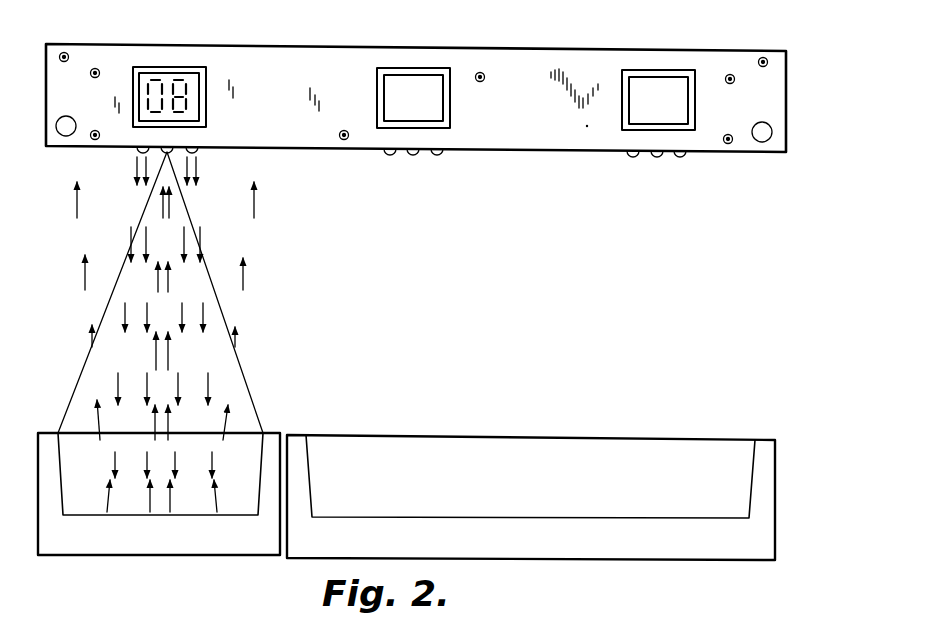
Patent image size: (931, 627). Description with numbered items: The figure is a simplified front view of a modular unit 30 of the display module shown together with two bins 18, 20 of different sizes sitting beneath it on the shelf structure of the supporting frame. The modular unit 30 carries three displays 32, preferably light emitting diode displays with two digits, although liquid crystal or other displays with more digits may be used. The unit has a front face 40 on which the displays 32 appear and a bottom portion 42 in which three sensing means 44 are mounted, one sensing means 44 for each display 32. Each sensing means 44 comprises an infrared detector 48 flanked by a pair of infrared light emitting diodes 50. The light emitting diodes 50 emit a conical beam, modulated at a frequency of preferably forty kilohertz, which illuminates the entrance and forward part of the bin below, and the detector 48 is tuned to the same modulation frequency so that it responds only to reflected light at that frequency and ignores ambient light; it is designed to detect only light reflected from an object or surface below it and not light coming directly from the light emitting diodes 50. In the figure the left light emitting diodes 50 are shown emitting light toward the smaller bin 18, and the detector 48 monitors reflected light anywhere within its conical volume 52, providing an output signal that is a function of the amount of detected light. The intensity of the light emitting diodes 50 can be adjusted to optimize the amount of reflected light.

The bin 18 is at (150, 537).
The bin 20 is at (559, 435).
The modular unit 30 is at (405, 13).
The display 32 is at (173, 66).
The front face 40 is at (575, 56).
The bottom portion 42 is at (587, 130).
The sensing means 44 is at (210, 193).
The infrared detector 48 is at (162, 153).
The infrared light emitting diodes 50 is at (138, 152).
The conical volume 52 is at (82, 362).